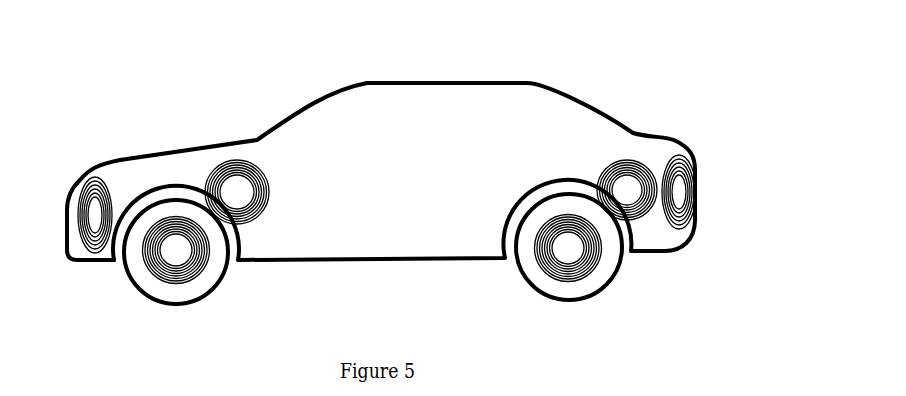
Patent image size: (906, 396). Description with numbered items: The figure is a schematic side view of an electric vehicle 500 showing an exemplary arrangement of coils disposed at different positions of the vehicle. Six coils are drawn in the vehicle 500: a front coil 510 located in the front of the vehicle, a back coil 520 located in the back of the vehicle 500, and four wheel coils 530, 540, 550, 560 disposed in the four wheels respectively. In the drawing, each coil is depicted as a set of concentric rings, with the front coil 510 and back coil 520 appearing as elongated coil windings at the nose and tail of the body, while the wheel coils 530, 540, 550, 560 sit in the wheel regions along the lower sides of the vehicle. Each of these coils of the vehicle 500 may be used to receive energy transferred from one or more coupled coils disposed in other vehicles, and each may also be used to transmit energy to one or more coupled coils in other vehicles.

The electric vehicle 500 is at (467, 79).
The front coil 510 is at (76, 185).
The back coil 520 is at (696, 208).
The wheel coil 530 is at (150, 278).
The wheel coil 540 is at (265, 180).
The wheel coil 550 is at (547, 278).
The wheel coil 560 is at (623, 158).